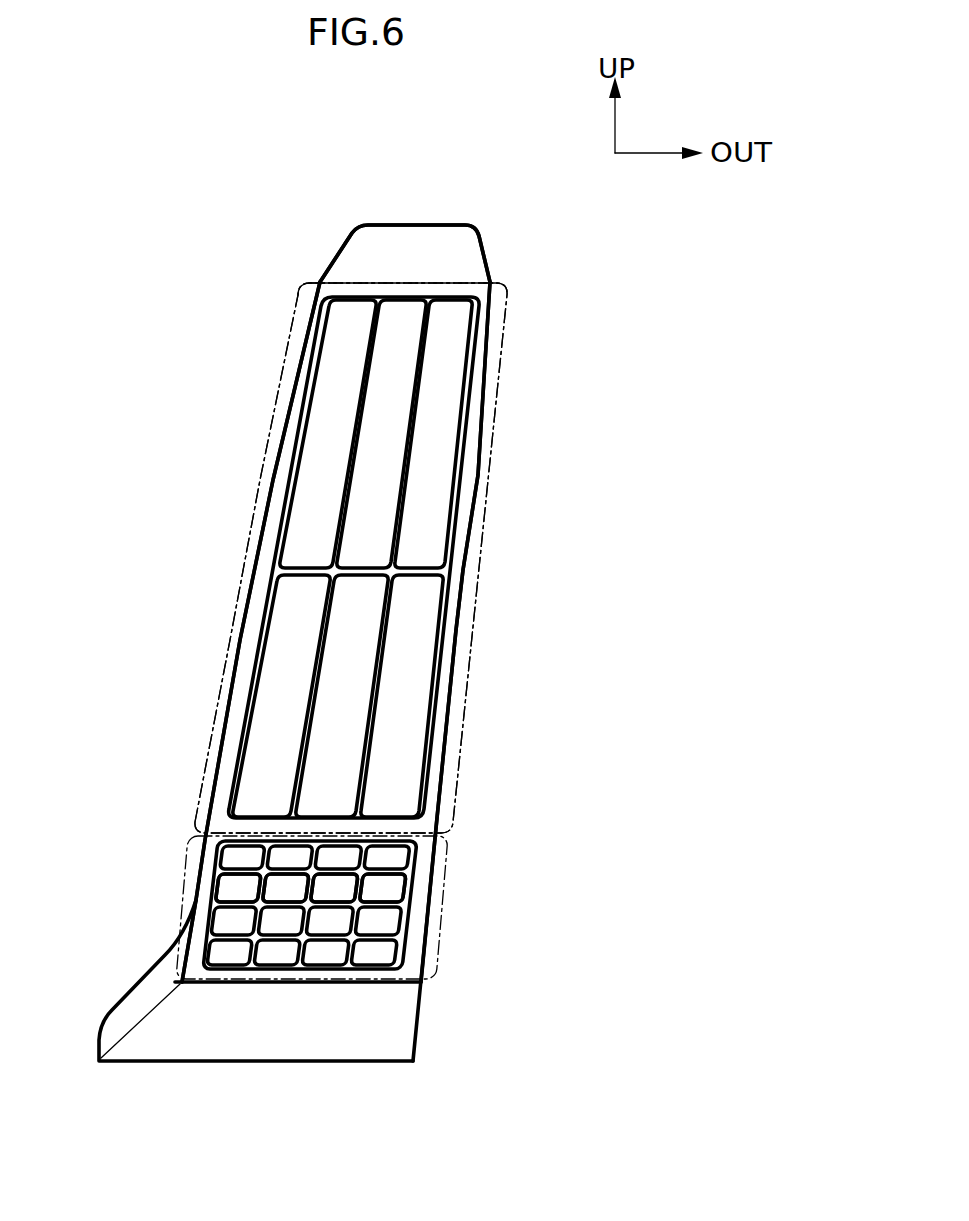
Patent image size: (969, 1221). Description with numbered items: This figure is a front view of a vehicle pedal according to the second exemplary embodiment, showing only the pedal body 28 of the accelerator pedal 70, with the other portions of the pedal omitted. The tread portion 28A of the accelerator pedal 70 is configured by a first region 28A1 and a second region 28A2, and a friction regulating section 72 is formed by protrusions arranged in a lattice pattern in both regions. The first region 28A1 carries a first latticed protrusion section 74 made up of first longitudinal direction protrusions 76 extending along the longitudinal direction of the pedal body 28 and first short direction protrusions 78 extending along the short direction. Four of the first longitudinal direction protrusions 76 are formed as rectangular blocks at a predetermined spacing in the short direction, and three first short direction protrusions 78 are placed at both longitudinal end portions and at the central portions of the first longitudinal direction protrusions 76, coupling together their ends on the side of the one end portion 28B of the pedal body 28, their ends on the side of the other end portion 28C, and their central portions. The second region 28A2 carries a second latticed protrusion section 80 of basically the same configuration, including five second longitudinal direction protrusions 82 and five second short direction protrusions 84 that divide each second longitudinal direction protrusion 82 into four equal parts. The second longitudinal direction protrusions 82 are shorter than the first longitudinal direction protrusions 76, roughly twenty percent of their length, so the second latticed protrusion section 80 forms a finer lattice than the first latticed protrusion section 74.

The pedal body 28 is at (373, 205).
The tread portion 28A is at (463, 250).
The first region 28A1 is at (498, 432).
The second region 28A2 is at (445, 908).
The one end portion 28B is at (377, 1033).
The other end portion 28C is at (372, 255).
The accelerator pedal 70 is at (588, 278).
The friction regulating section 72 is at (535, 410).
The first latticed protrusion section 74 is at (462, 479).
The first longitudinal direction protrusions 76 is at (385, 598).
The first short direction protrusions 78 is at (388, 817).
The second latticed protrusion section 80 is at (418, 863).
The second longitudinal direction protrusions 82 is at (307, 894).
The second short direction protrusions 84 is at (383, 880).